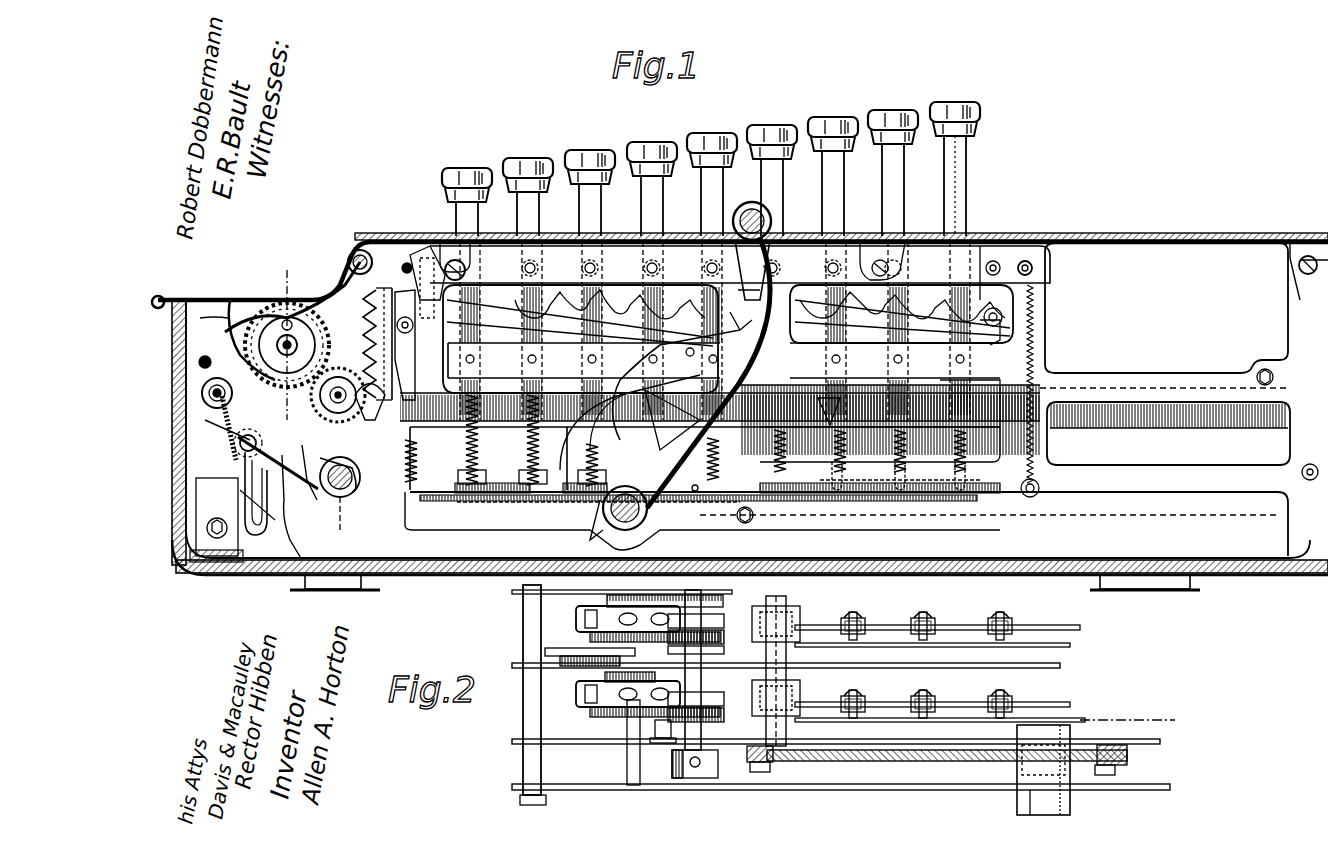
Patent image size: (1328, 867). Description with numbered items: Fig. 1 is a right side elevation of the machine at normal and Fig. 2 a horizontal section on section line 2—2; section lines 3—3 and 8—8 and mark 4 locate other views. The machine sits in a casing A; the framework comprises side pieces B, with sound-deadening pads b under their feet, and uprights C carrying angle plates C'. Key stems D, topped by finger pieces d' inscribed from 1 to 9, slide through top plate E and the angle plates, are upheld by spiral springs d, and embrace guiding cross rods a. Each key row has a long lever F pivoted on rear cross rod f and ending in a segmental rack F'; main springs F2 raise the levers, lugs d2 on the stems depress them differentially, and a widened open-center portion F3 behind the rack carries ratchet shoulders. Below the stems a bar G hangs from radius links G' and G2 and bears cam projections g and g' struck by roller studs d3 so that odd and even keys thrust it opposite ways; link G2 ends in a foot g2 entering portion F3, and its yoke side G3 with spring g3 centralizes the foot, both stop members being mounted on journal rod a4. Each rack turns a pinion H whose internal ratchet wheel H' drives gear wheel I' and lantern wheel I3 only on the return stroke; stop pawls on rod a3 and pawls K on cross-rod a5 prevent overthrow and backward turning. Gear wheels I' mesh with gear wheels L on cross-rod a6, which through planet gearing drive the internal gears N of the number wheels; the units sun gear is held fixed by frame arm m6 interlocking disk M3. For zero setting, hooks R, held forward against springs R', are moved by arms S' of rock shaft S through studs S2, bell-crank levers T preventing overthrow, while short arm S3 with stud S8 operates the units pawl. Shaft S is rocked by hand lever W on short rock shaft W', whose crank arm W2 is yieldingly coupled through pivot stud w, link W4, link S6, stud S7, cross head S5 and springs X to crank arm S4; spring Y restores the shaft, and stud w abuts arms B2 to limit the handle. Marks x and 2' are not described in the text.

In FIG. 1, the key lever plate L is at (176, 300).
In FIG. 2, the key lever plate L is at (575, 620).
In FIG. 1, the pivot pin 2 is at (453, 351).
In FIG. 1, the ratchet arm R is at (237, 314).
In FIG. 2, the ratchet arm R is at (590, 648).
In FIG. 1, the main gear wheel M3 is at (286, 300).
In FIG. 2, the main gear wheel M3 is at (600, 735).
In FIG. 1, the center line 4 is at (292, 274).
In FIG. 1, the cam arm m6 is at (330, 275).
In FIG. 2, the cam arm m6 is at (610, 745).
In FIG. 1, the curved arm a5 is at (332, 280).
In FIG. 1, the roller pivot F' is at (360, 225).
In FIG. 2, the roller pivot F' is at (1106, 654).
In FIG. 1, the pin 9 is at (405, 255).
In FIG. 1, the pawl G2 is at (420, 262).
In FIG. 2, the pawl G2 is at (830, 760).
In FIG. 1, the screw F3 is at (486, 236).
In FIG. 1, the slide bar a4 is at (412, 236).
In FIG. 2, the slide bar a4 is at (790, 615).
In FIG. 1, the key guide screw d3 is at (605, 236).
In FIG. 1, the curved lever W is at (806, 240).
In FIG. 1, the key stem D is at (962, 200).
In FIG. 2, the key stem D is at (940, 625).
In FIG. 1, the key d' is at (958, 147).
In FIG. 1, the top rail E is at (1178, 234).
In FIG. 1, the spring g is at (750, 293).
In FIG. 1, the spring housing g' is at (812, 321).
In FIG. 1, the bar 8 is at (580, 321).
In FIG. 1, the rack K is at (376, 344).
In FIG. 2, the rack K is at (769, 671).
In FIG. 1, the shaft a6 is at (288, 346).
In FIG. 2, the shaft a6 is at (633, 788).
In FIG. 1, the guide bar a is at (590, 358).
In FIG. 1, the stud S5 is at (683, 353).
In FIG. 1, the wedge Y is at (827, 409).
In FIG. 1, the plate G is at (890, 420).
In FIG. 2, the plate G is at (1067, 690).
In FIG. 1, the pivot plate G' is at (1037, 295).
In FIG. 1, the chain F2 is at (1035, 335).
In FIG. 1, the panel A is at (1310, 300).
In FIG. 1, the base plate B is at (1170, 382).
In FIG. 2, the base plate B is at (1165, 790).
In FIG. 1, the key stop d2 is at (960, 375).
In FIG. 1, the pin w is at (715, 440).
In FIG. 2, the pin w is at (1125, 752).
In FIG. 1, the key rod d is at (880, 447).
In FIG. 2, the key rod d is at (940, 655).
In FIG. 1, the carriage rail F is at (1168, 433).
In FIG. 1, the screw f is at (1307, 455).
In FIG. 1, the spring plate B2 is at (705, 465).
In FIG. 1, the spring G3 is at (472, 440).
In FIG. 2, the spring G3 is at (812, 680).
In FIG. 1, the pinion g2 is at (362, 468).
In FIG. 1, the hub g3 is at (362, 484).
In FIG. 1, the stud S6 is at (705, 503).
In FIG. 2, the stud S6 is at (902, 760).
In FIG. 1, the lever X is at (612, 520).
In FIG. 1, the lower plate C' is at (846, 524).
In FIG. 2, the lower plate C' is at (962, 681).
In FIG. 1, the foot b is at (215, 575).
In FIG. 1, the link S is at (348, 505).
In FIG. 1, the bracket S' is at (216, 520).
In FIG. 1, the lever S2 is at (224, 492).
In FIG. 1, the spring S8 is at (278, 539).
In FIG. 1, the arm a3 is at (278, 502).
In FIG. 1, the arm R' is at (201, 460).
In FIG. 1, the pin 2' is at (178, 431).
In FIG. 1, the pin x is at (188, 375).
In FIG. 1, the bar T is at (257, 433).
In FIG. 1, the stud S3 is at (262, 575).
In FIG. 1, the tooth 1 is at (373, 401).
In FIG. 2, the plate N is at (560, 620).
In FIG. 2, the gear I3 is at (725, 625).
In FIG. 2, the gear I' is at (701, 694).
In FIG. 2, the frame plate C is at (808, 672).
In FIG. 2, the bar W4 is at (1085, 740).
In FIG. 2, the section line 3 is at (1180, 720).
In FIG. 2, the plate W2 is at (1160, 742).
In FIG. 2, the block W' is at (1017, 773).
In FIG. 2, the stud S7 is at (762, 775).
In FIG. 2, the bracket H' is at (699, 785).
In FIG. 2, the bracket H is at (637, 750).
In FIG. 2, the stud S4 is at (665, 760).